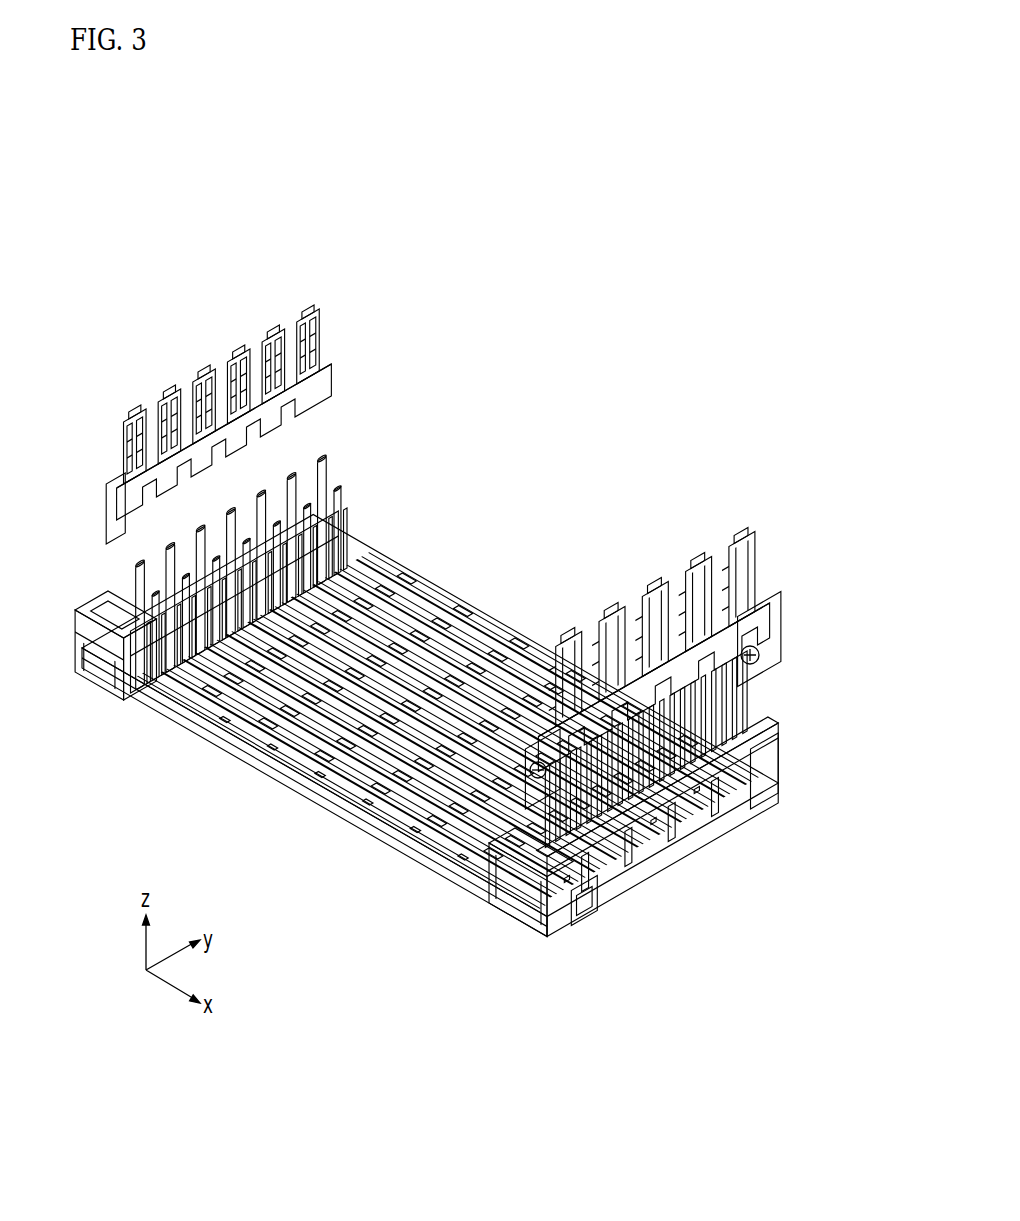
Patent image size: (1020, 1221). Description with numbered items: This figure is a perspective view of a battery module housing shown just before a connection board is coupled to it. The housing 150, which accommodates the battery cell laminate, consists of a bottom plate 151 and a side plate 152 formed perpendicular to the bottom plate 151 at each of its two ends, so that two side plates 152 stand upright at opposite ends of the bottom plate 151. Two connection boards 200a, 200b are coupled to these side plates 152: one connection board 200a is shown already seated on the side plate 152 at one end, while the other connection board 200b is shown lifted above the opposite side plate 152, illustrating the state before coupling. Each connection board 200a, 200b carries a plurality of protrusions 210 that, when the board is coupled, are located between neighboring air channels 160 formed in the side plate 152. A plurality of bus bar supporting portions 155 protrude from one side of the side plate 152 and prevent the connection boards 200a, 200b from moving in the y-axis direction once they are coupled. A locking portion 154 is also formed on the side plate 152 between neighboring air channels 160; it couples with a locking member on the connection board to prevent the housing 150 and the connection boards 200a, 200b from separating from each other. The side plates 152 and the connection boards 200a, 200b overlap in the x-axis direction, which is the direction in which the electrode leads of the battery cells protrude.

The housing 150 is at (210, 767).
The bottom plate 151 is at (310, 790).
The side plate 152 is at (127, 625).
The locking portion 154 is at (603, 838).
The bus bar supporting portion 155 is at (146, 599).
The air channel 160 is at (678, 823).
The connection board 200a is at (736, 530).
The connection board 200b is at (344, 334).
The protrusion 210 is at (270, 452).